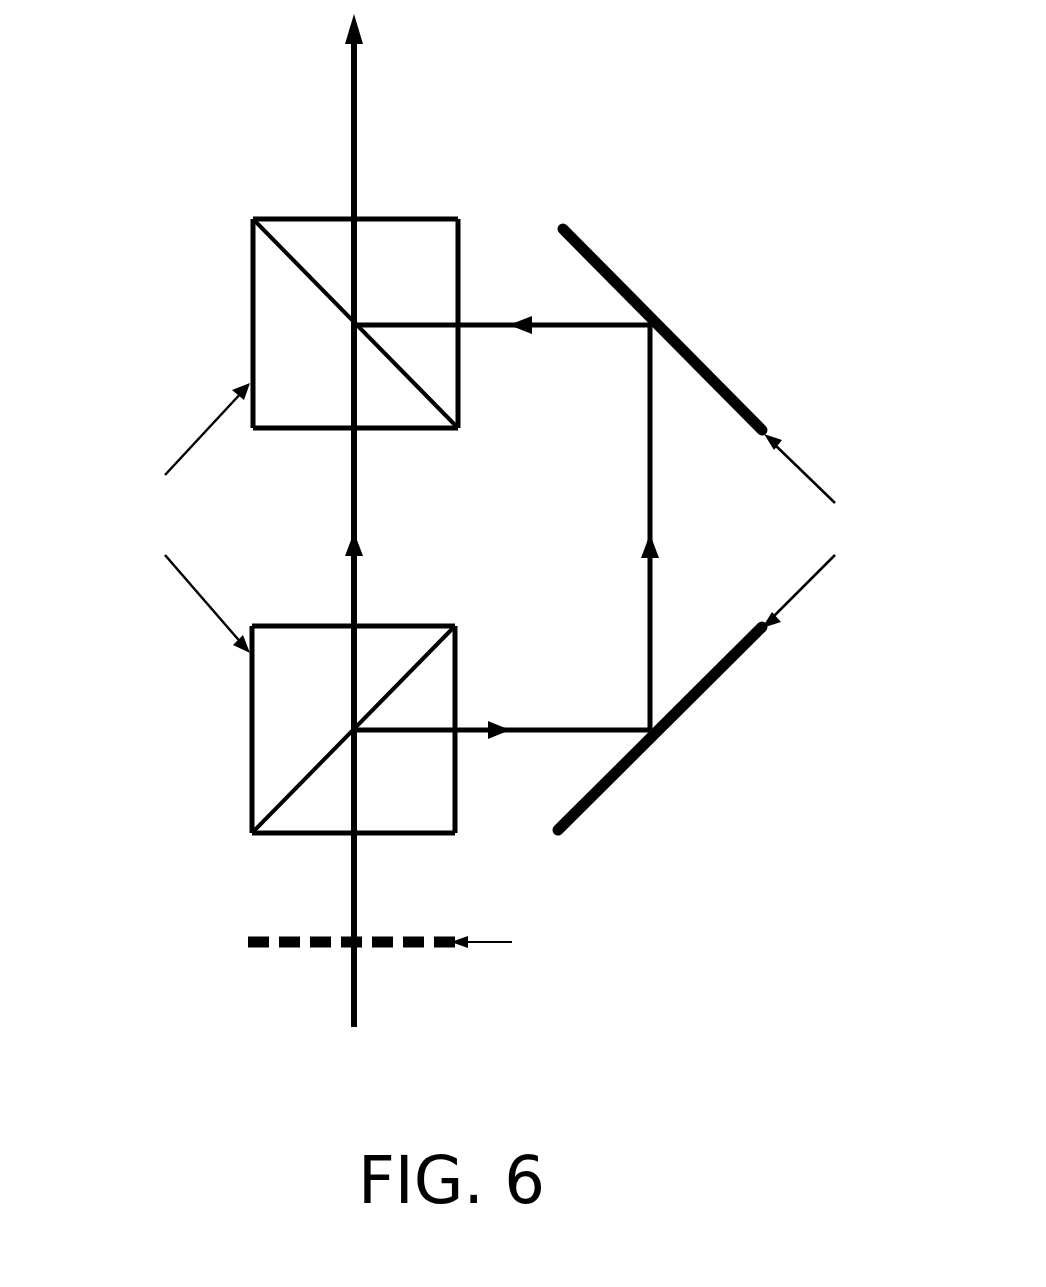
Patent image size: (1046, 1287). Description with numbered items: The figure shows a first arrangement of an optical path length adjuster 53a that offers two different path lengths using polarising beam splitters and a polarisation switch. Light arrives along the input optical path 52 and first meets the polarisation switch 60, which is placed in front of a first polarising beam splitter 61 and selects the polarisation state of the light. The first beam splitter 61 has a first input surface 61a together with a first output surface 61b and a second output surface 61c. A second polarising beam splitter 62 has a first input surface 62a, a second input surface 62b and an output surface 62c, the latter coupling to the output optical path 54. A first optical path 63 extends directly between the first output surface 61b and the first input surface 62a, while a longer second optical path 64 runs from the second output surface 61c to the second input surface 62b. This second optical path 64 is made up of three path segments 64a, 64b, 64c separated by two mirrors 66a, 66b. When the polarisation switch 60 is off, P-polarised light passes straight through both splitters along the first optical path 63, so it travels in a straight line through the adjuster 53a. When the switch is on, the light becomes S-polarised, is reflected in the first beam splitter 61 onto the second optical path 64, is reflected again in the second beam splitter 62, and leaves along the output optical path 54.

The input optical path 52 is at (352, 1003).
The optical path length adjuster 53a is at (647, 124).
The output optical path 54 is at (352, 90).
The polarisation switch 60 is at (248, 943).
The first polarising beam splitter 61 is at (252, 733).
The first input surface 61a is at (290, 833).
The first output surface 61b is at (427, 626).
The second output surface 61c is at (455, 777).
The second polarising beam splitter 62 is at (252, 302).
The first input surface 62a is at (292, 428).
The second input surface 62b is at (458, 287).
The output surface 62c is at (418, 219).
The first optical path 63 is at (356, 477).
The second optical path 64 is at (650, 490).
The first path segment 64a is at (556, 729).
The second path segment 64b is at (650, 605).
The third path segment 64c is at (575, 335).
The first mirror 66a is at (710, 690).
The second mirror 66b is at (697, 351).